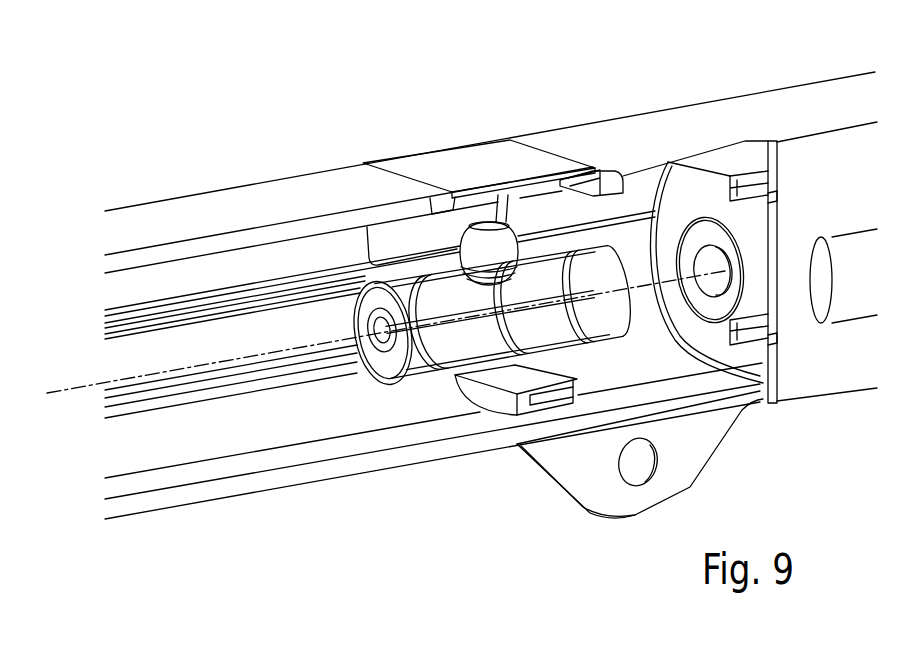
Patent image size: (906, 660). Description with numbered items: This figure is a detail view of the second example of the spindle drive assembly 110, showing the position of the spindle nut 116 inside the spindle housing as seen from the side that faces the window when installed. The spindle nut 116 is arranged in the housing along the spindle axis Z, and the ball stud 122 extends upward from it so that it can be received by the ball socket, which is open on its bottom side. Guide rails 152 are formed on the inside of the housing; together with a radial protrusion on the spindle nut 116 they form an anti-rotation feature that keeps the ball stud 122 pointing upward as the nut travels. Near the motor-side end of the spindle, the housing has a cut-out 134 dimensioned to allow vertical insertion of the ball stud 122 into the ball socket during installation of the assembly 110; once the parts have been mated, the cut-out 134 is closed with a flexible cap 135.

The spindle drive assembly 110 is at (427, 497).
The spindle nut 116 is at (297, 193).
The ball stud 122 is at (468, 243).
The cut-out 134 is at (597, 160).
The flexible cap 135 is at (472, 173).
The guide rail 152 is at (230, 307).
The axis Z is at (86, 388).